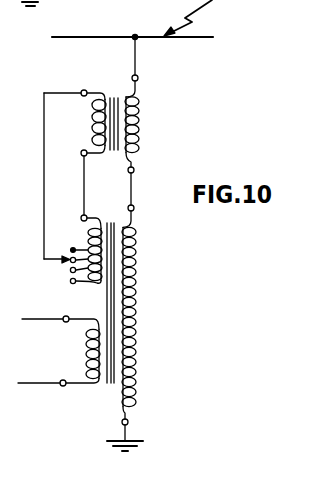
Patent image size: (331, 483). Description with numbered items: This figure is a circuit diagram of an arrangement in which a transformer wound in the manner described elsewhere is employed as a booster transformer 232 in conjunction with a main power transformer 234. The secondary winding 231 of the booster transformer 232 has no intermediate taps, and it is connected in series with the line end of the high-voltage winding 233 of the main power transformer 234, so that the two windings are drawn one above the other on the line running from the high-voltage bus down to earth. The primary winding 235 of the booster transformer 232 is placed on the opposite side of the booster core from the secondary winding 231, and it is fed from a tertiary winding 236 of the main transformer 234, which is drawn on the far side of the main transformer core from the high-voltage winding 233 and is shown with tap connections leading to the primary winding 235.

The secondary winding of the booster transformer 231 is at (125, 130).
The booster transformer 232 is at (144, 107).
The high-voltage winding of the main power transformer 233 is at (136, 291).
The main power transformer 234 is at (107, 309).
The primary winding of the booster transformer 235 is at (94, 127).
The tertiary winding of the main transformer 236 is at (66, 266).